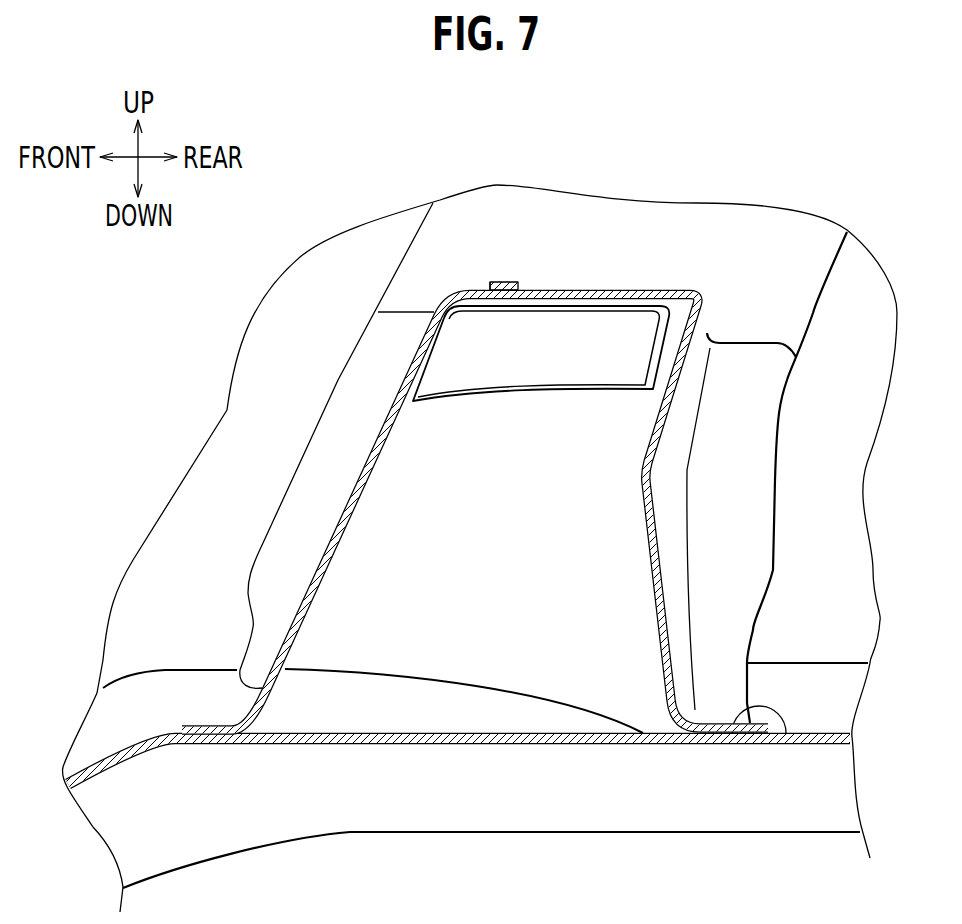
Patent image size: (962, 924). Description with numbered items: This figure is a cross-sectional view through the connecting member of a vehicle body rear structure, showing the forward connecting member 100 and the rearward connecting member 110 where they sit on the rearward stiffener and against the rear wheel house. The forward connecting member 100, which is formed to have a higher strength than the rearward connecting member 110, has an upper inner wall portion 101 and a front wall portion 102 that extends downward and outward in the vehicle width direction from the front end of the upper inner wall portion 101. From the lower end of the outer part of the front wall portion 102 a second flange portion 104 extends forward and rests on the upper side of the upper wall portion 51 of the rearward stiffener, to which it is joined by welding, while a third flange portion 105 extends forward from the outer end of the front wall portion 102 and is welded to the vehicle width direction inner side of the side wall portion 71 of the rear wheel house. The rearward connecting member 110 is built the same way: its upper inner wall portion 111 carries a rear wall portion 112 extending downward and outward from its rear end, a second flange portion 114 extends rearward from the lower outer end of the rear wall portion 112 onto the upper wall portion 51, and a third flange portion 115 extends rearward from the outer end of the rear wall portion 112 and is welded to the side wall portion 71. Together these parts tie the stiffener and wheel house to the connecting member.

The upper wall portion 51 is at (808, 728).
The side wall portion 71 is at (320, 273).
The forward connecting member 100 is at (327, 472).
The upper inner wall portion 101 is at (486, 282).
The front wall portion 102 is at (377, 433).
The second flange portion 104 is at (204, 724).
The third flange portion 105 is at (288, 568).
The rearward connecting member 110 is at (676, 518).
The upper inner wall portion 111 is at (598, 290).
The rear wall portion 112 is at (662, 552).
The second flange portion 114 is at (776, 744).
The third flange portion 115 is at (750, 442).